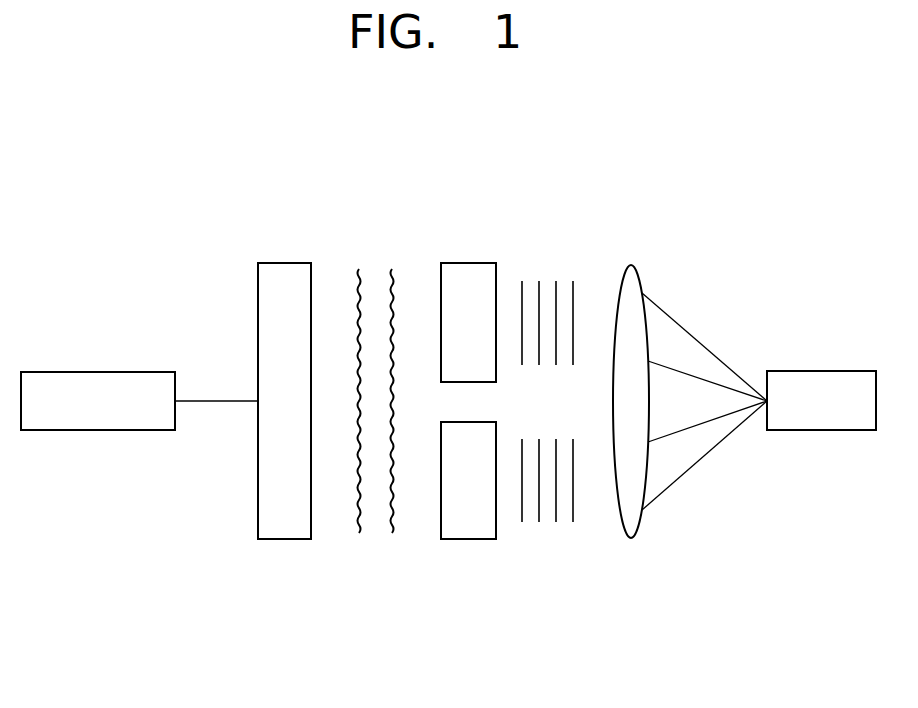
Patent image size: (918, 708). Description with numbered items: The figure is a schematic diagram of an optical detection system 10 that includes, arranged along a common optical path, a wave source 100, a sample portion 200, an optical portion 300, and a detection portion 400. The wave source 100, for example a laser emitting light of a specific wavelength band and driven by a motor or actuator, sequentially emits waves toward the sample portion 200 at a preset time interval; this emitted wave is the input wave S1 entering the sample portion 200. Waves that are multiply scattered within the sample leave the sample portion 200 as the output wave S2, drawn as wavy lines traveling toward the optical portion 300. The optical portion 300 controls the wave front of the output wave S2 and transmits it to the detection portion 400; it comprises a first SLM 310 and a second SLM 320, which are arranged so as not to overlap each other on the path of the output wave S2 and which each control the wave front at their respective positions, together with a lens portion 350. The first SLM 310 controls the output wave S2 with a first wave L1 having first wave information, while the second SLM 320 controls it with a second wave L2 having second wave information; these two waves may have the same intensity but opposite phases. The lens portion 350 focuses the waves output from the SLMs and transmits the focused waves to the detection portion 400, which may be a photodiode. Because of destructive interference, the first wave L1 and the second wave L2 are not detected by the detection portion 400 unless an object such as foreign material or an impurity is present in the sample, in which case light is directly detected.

The optical detection system 10 is at (738, 182).
The wave source 100 is at (65, 430).
The input wave S1 is at (216, 401).
The sample portion 200 is at (285, 539).
The output wave S2 is at (369, 562).
The optical portion 300 is at (604, 427).
The first SLM 310 is at (468, 263).
The second SLM 320 is at (468, 539).
The first wave L1 is at (549, 262).
The second wave L2 is at (551, 543).
The lens portion 350 is at (686, 446).
The detection portion 400 is at (831, 430).